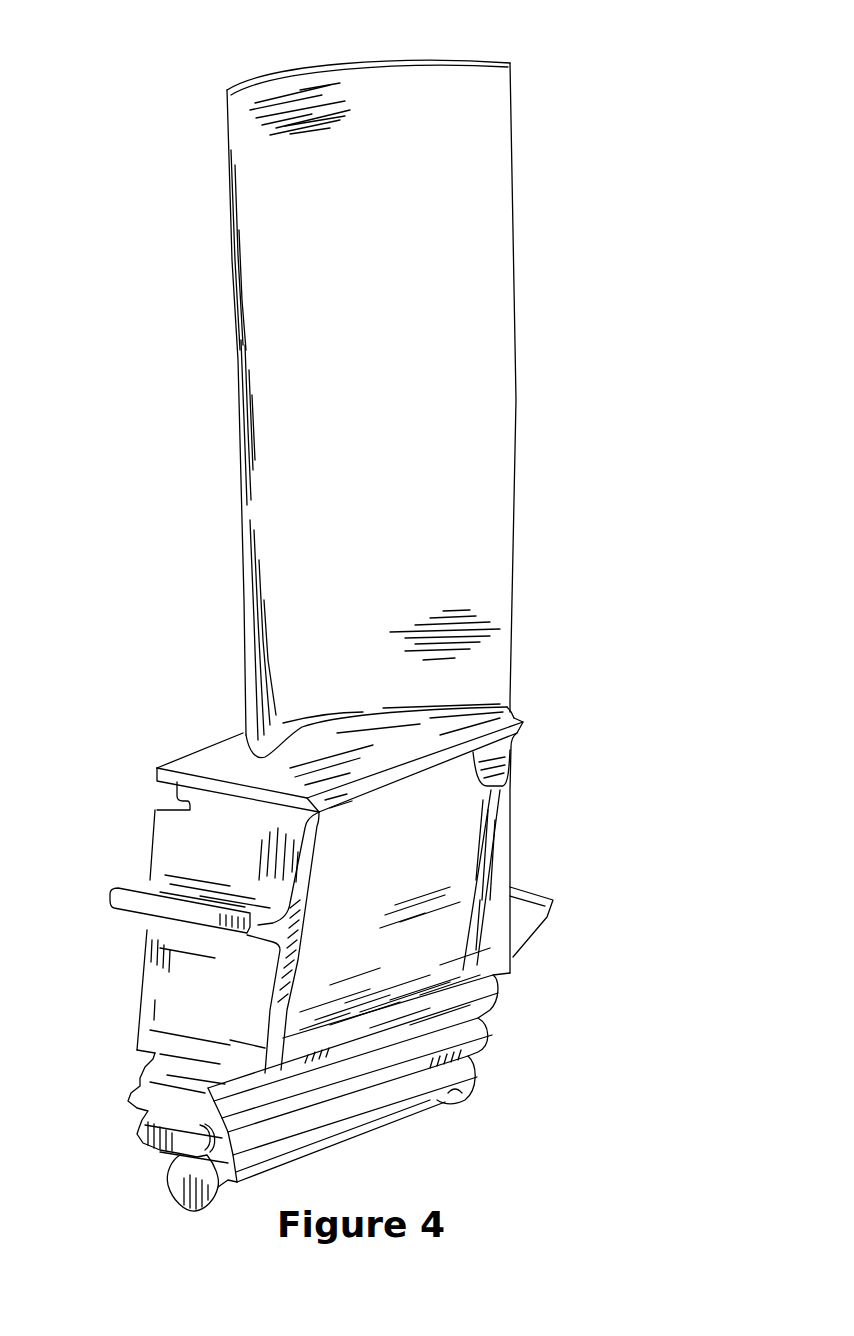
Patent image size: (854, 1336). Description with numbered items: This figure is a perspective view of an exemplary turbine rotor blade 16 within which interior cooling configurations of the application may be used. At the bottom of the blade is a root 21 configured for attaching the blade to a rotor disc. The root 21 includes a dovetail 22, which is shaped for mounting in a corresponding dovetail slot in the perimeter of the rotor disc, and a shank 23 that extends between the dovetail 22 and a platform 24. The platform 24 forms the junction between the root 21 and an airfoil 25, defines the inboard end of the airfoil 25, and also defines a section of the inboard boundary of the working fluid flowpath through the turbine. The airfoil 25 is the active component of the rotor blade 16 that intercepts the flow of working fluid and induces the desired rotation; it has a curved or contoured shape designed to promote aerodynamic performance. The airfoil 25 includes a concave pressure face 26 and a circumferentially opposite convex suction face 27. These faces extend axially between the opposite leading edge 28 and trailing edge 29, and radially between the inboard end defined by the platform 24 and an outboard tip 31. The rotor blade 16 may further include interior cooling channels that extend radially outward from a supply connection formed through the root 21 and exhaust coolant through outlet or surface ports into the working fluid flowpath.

The rotor blade 16 is at (642, 53).
The root 21 is at (553, 1010).
The dovetail 22 is at (150, 1110).
The shank 23 is at (207, 1000).
The platform 24 is at (227, 784).
The airfoil 25 is at (582, 243).
The pressure face 26 is at (397, 469).
The suction face 27 is at (536, 527).
The leading edge 28 is at (237, 382).
The trailing edge 29 is at (517, 408).
The outboard tip 31 is at (307, 72).